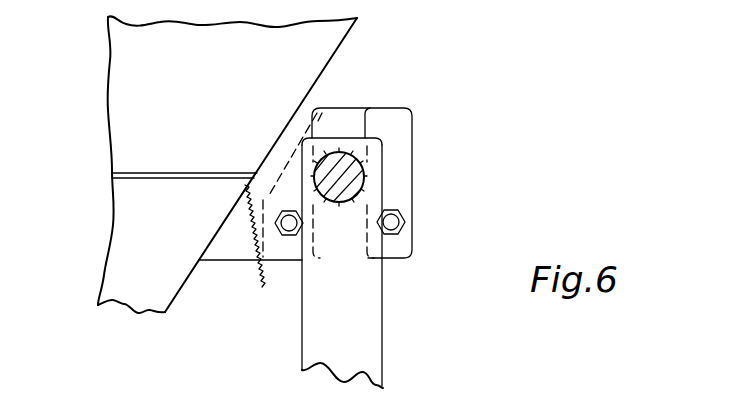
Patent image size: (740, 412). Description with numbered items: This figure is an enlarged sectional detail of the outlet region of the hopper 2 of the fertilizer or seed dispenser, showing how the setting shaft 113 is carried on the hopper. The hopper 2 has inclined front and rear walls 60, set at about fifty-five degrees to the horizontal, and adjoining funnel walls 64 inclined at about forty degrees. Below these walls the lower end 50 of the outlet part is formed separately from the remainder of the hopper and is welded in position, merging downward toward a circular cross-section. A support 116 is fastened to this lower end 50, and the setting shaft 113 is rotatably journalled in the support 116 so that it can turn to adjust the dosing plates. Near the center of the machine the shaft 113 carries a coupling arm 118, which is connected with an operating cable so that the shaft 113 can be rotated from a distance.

The hopper 2 is at (100, 50).
The lower end of the outlet part 50 is at (122, 220).
The front and rear walls 60 is at (342, 50).
The funnel wall 64 is at (118, 97).
The setting shaft 113 is at (360, 172).
The support 116 is at (236, 226).
The coupling arm 118 is at (315, 315).